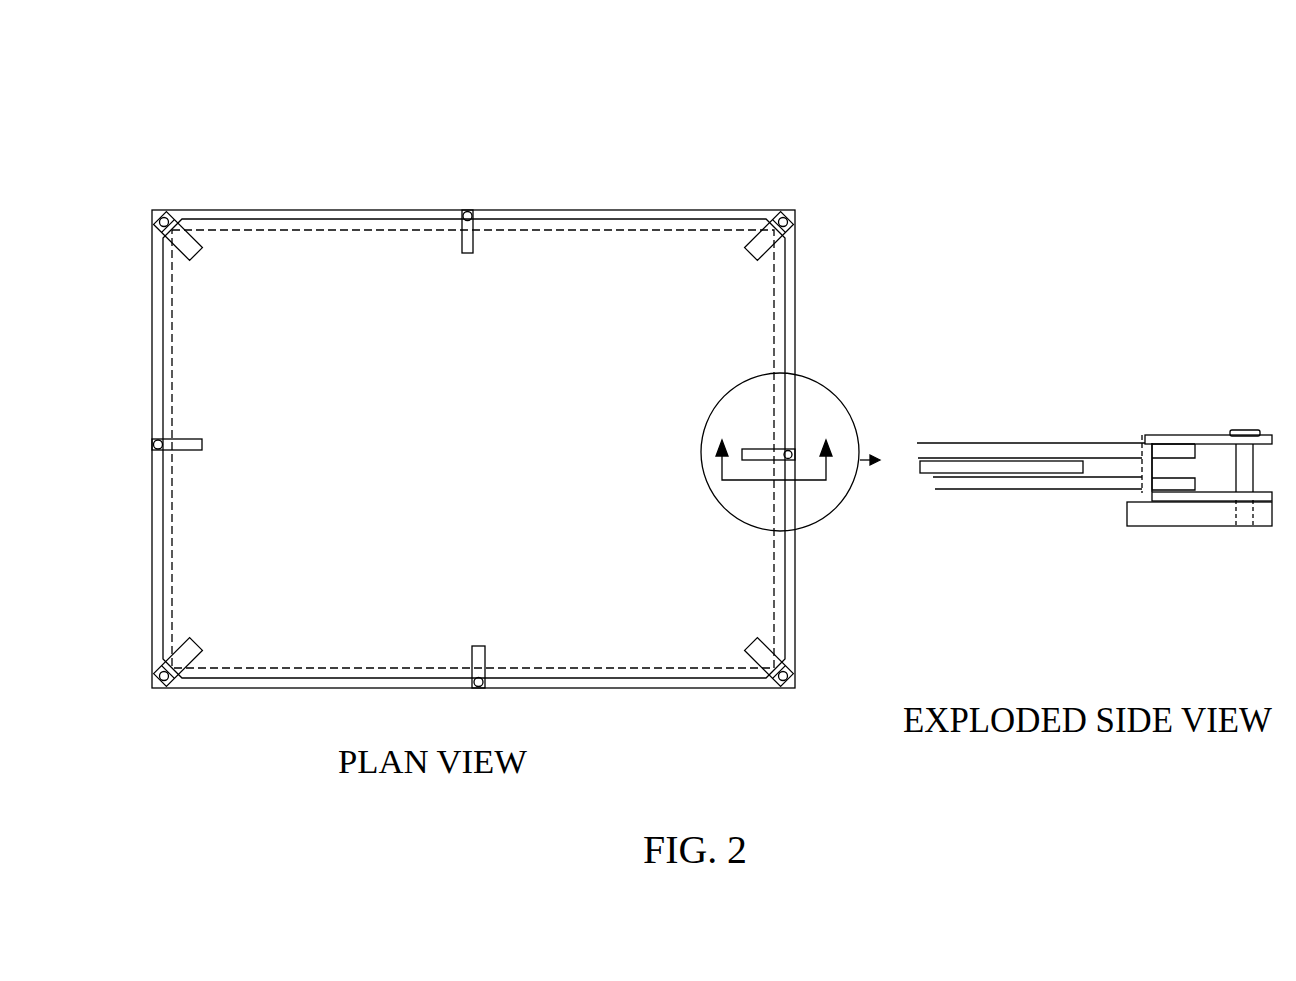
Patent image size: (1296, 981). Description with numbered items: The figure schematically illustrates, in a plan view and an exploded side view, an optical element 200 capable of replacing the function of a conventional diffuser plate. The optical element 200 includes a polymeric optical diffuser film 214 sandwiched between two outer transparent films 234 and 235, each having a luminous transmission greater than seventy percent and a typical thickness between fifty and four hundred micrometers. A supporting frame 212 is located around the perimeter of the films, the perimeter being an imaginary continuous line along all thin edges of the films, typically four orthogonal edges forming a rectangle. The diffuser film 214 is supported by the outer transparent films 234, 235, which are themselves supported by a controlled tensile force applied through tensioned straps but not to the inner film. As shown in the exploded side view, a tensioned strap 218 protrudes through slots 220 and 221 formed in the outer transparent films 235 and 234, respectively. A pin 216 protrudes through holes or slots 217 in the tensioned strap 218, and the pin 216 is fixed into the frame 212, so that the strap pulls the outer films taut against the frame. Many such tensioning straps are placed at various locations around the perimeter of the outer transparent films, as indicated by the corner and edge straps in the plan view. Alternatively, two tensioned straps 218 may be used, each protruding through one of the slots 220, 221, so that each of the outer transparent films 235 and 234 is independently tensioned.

The optical element 200 is at (730, 111).
The supporting frame 212 is at (1143, 514).
The polymeric optical diffuser film 214 is at (1003, 476).
The pin 216 is at (1247, 453).
The holes or slots 217 is at (1242, 445).
The tensioned strap 218 is at (1227, 493).
The slot 220 is at (1147, 447).
The slot 221 is at (1143, 483).
The transparent film 234 is at (1078, 483).
The transparent film 235 is at (1017, 442).